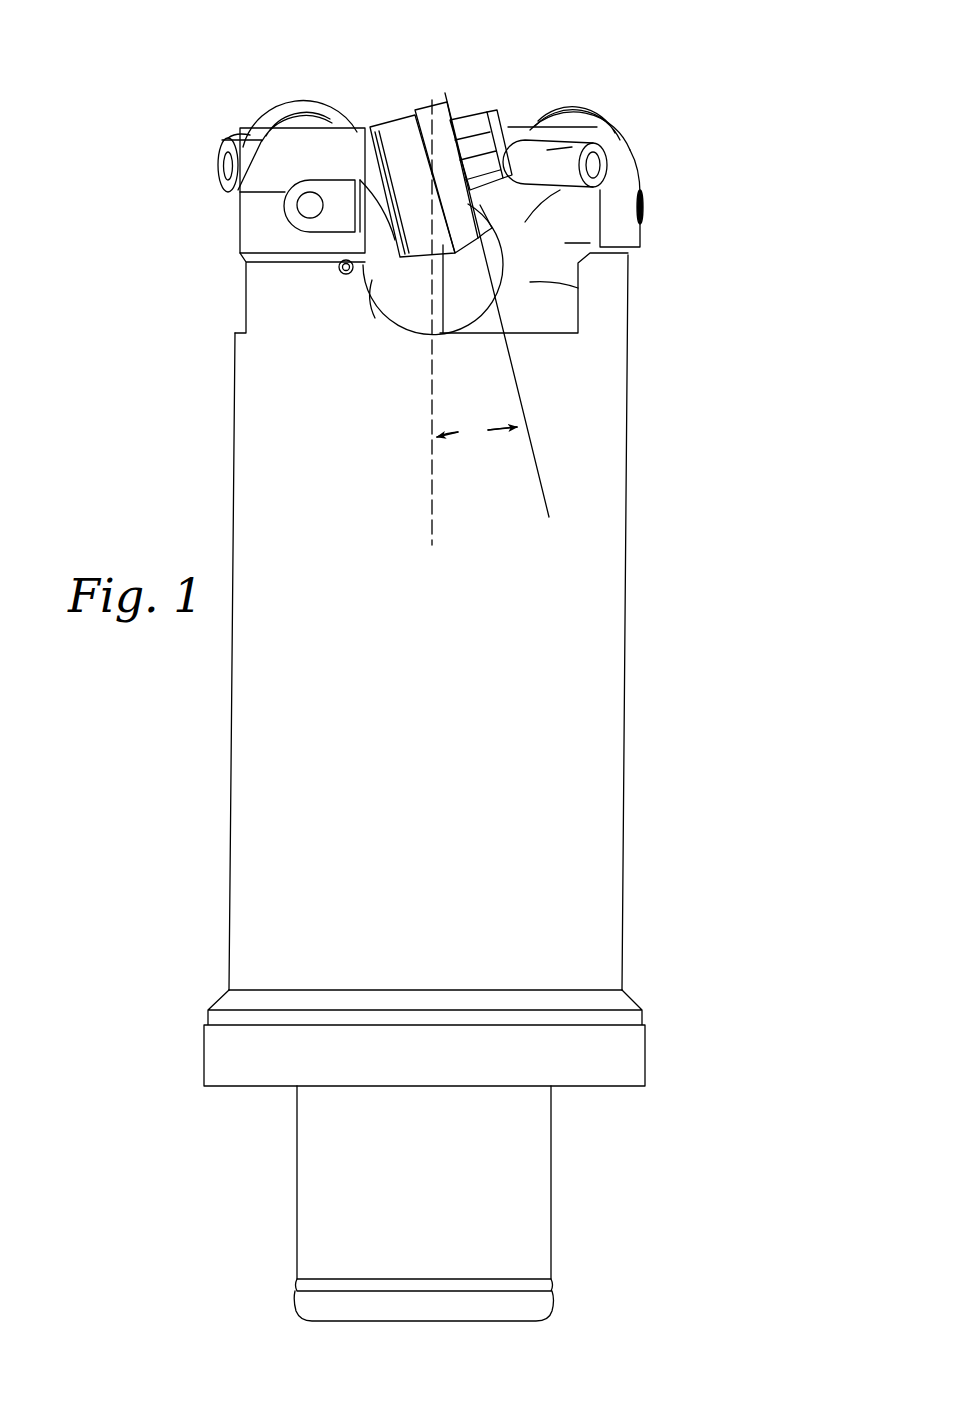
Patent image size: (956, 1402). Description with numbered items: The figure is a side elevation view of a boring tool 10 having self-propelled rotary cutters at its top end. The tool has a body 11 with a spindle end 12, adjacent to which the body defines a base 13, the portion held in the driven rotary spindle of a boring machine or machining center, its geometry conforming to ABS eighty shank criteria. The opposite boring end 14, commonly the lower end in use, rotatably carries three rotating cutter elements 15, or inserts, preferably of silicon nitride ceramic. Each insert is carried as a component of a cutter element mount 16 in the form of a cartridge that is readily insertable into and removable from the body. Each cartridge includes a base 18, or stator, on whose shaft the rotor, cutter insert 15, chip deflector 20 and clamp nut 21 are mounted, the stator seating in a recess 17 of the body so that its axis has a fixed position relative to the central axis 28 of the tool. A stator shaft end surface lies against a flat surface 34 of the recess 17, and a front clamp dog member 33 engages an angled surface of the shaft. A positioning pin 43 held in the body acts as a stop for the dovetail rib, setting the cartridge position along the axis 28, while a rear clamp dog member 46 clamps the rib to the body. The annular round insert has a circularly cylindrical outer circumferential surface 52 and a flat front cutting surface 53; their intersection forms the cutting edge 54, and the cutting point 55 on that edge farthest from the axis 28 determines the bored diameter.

The boring tool 10 is at (202, 521).
The body 11 is at (583, 705).
The spindle end 12 is at (505, 1322).
The base 13 is at (545, 1166).
The boring end 14 is at (348, 128).
The cutter element 15 is at (278, 108).
The cutter element mount 16 is at (457, 262).
The recess 17 is at (380, 310).
The base 18 is at (372, 282).
The chip deflector 20 is at (468, 128).
The clamp nut 21 is at (525, 222).
The central axis 28 is at (430, 405).
The front clamp dog member 33 is at (218, 161).
The flat surface 34 is at (587, 203).
The positioning pin 43 is at (340, 274).
The rear clamp dog member 46 is at (335, 214).
The outer circumferential surface 52 is at (530, 282).
The front cutting surface 53 is at (412, 112).
The cutting edge 54 is at (565, 243).
The cutting point 55 is at (493, 126).